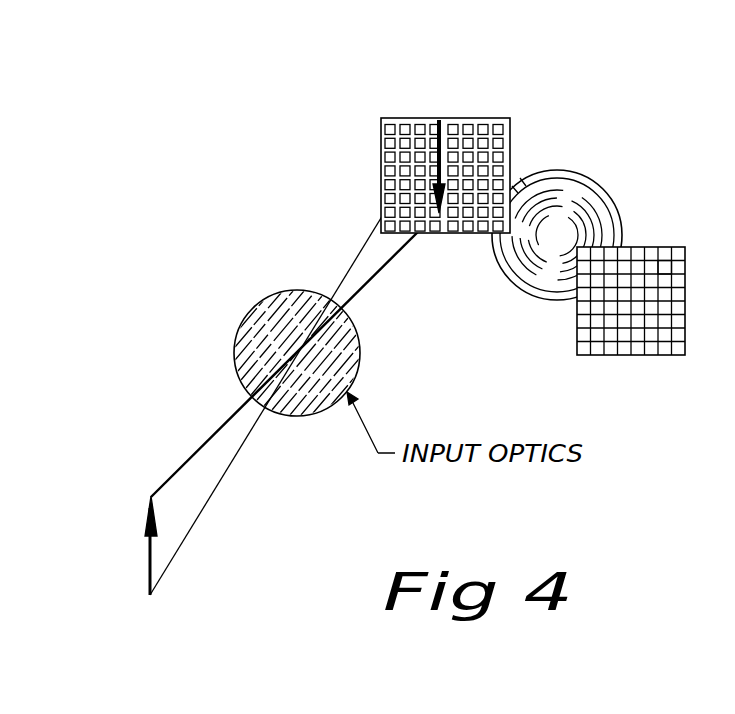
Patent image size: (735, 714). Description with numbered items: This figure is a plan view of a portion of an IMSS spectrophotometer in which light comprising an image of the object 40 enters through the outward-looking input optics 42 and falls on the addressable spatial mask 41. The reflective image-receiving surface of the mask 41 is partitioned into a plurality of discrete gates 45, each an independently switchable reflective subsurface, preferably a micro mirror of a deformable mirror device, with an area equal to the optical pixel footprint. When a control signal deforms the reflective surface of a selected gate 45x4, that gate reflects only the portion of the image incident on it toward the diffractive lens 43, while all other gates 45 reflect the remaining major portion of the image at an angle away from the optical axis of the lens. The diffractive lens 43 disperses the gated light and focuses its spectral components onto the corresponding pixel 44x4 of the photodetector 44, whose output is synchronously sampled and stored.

The object 40 is at (163, 540).
The addressable spatial mask 41 is at (463, 137).
The input optics 42 is at (265, 293).
The diffractive lens 43 is at (567, 187).
The photodetector 44 is at (649, 248).
The gate 45 is at (404, 128).
The gate 45xy (micro mirror) 45x4 is at (505, 142).
The pixel 44xy of the photodetector 44x4 is at (672, 265).